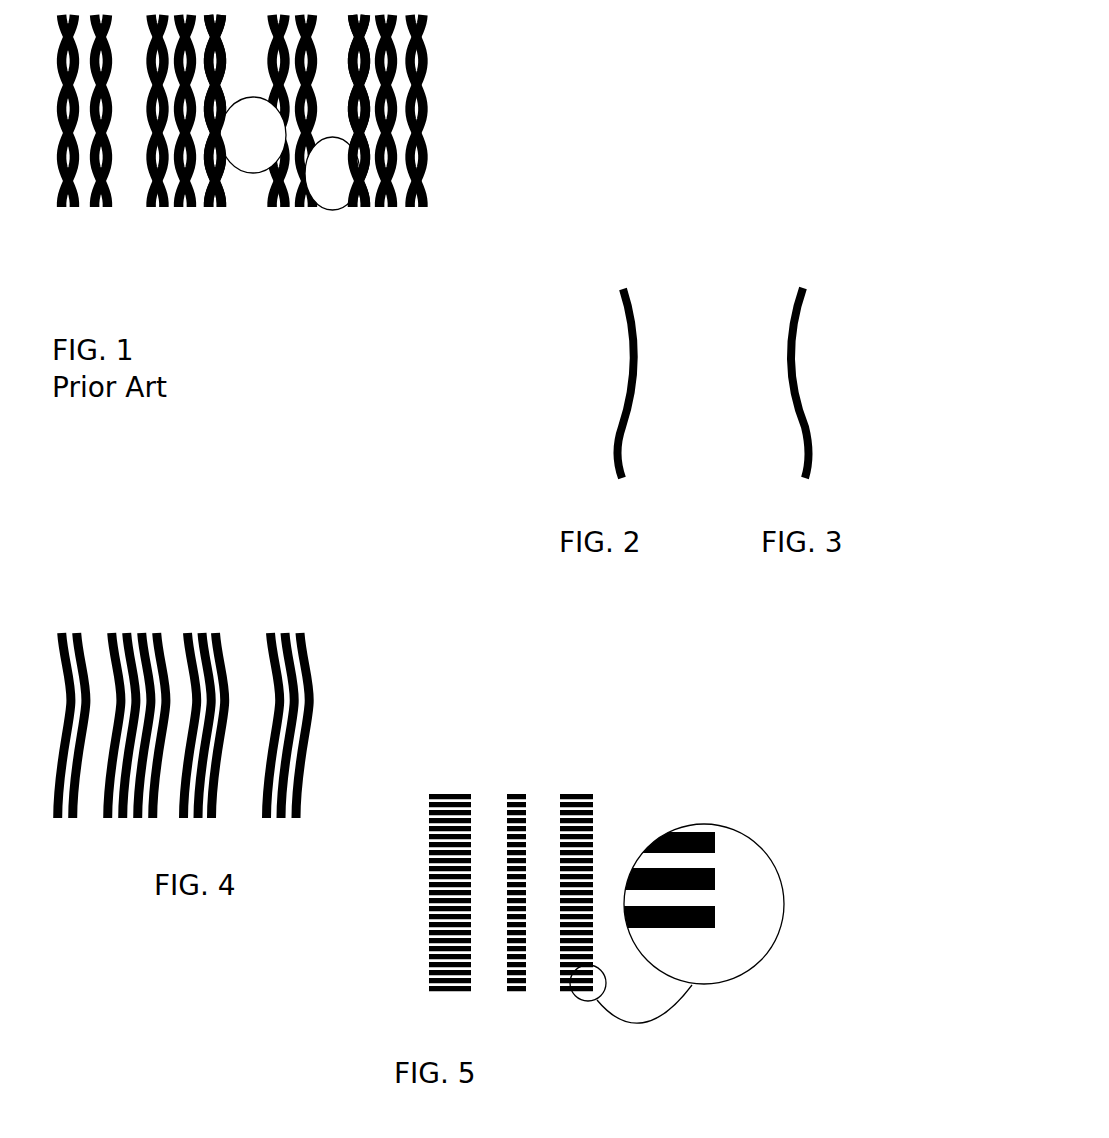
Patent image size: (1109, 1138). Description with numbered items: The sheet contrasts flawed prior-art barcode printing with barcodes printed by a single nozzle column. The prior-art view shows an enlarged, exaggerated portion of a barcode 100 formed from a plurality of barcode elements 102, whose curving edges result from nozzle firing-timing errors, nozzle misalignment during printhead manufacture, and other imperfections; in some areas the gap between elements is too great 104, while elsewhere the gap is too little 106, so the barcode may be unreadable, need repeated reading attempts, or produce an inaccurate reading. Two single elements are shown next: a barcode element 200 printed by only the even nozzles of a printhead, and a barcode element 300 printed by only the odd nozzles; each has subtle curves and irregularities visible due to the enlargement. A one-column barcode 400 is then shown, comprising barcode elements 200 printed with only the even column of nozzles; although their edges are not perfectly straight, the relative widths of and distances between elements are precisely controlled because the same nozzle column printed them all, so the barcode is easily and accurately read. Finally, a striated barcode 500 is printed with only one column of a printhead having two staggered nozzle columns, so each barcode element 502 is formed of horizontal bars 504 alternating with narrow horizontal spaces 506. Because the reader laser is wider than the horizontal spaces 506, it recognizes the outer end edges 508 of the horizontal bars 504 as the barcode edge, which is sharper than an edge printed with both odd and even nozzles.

In FIG. 1, the barcode 100 is at (378, 171).
In FIG. 1, the barcode elements 102 is at (410, 213).
In FIG. 1, the gap between barcode elements that is too great 104 is at (240, 173).
In FIG. 1, the gap between barcode elements that is too little 106 is at (330, 210).
In FIG. 2, the barcode element 200 is at (639, 313).
In FIG. 4, the barcode element 200 is at (140, 630).
In FIG. 3, the barcode element 300 is at (787, 337).
In FIG. 4, the one-column barcode 400 is at (239, 652).
In FIG. 5, the striated barcode 500 is at (633, 866).
In FIG. 5, the barcode element 502 is at (517, 793).
In FIG. 5, the horizontal bars 504 is at (713, 928).
In FIG. 5, the horizontal spaces 506 is at (715, 898).
In FIG. 5, the outer end edges 508 is at (712, 832).